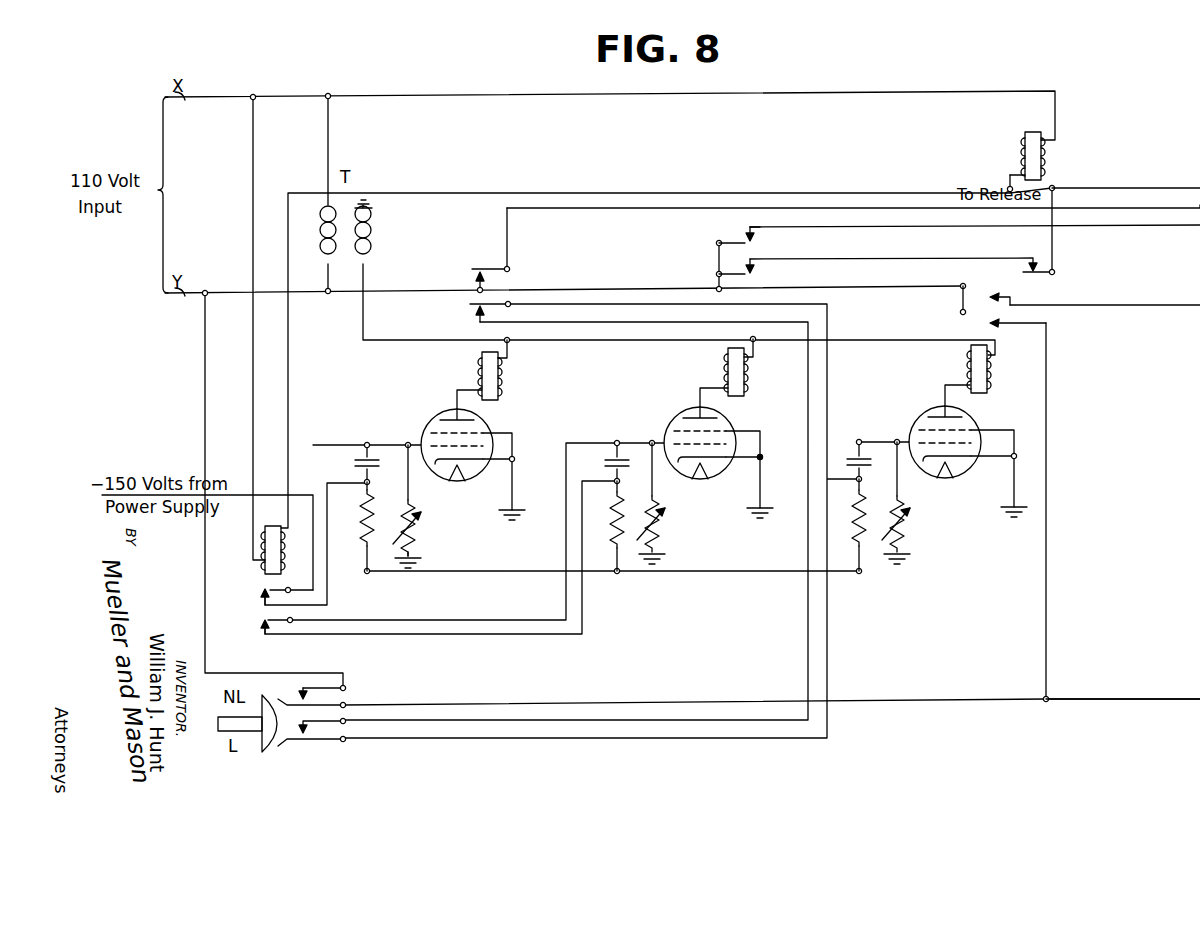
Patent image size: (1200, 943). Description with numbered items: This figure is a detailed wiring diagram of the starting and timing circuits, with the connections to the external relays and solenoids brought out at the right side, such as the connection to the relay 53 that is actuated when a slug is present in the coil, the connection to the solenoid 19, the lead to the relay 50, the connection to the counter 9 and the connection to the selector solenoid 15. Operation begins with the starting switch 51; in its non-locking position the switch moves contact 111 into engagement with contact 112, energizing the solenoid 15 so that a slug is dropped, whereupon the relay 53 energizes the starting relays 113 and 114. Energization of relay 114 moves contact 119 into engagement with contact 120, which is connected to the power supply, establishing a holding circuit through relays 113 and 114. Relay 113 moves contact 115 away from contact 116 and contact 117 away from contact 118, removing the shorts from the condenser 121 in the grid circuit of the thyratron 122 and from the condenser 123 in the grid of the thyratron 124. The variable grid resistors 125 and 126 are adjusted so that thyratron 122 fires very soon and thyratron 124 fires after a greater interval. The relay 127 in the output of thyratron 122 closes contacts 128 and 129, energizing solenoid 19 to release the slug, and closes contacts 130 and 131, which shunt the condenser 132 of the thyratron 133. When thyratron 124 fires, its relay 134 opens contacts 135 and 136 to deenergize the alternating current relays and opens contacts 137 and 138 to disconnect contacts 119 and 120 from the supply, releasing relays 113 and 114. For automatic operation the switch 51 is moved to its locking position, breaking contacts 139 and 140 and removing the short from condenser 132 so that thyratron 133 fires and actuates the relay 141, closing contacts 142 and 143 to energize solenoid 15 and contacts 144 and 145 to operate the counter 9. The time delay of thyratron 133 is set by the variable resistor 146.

The starting switch 51 is at (233, 723).
The switch contact 111 is at (312, 698).
The switch contact 112 is at (322, 685).
The starting relay 113 is at (266, 564).
The starting relay 114 is at (1030, 138).
The relay contact 115 is at (261, 592).
The relay contact 116 is at (265, 598).
The relay contact 117 is at (265, 620).
The relay contact 118 is at (265, 641).
The holding relay contact 119 is at (1054, 273).
The holding relay contact 120 is at (1030, 251).
The condenser 121 is at (361, 460).
The thyratron 122 is at (442, 408).
The condenser 123 is at (608, 462).
The thyratron 124 is at (674, 414).
The variable grid resistor 125 is at (412, 527).
The variable grid resistor 126 is at (662, 527).
The relay 127 is at (500, 382).
The relay contact 128 is at (470, 268).
The relay contact 129 is at (484, 279).
The relay contact 130 is at (472, 304).
The relay contact 131 is at (478, 322).
The condenser 132 is at (866, 449).
The thyratron 133 is at (922, 411).
The relay 134 is at (746, 372).
The relay contact 135 is at (747, 233).
The relay contact 136 is at (756, 237).
The relay contact 137 is at (719, 262).
The relay contact 138 is at (756, 267).
The switch contact 139 is at (312, 751).
The switch contact 140 is at (322, 729).
The relay 141 is at (987, 362).
The relay contact 142 is at (970, 314).
The relay contact 143 is at (1000, 320).
The relay contact 144 is at (982, 286).
The relay contact 145 is at (999, 298).
The variable resistor 146 is at (907, 522).
The relay 53 is at (1186, 184).
The solenoid 19 is at (1186, 205).
The relay 50 is at (1189, 225).
The counter 9 is at (1105, 295).
The solenoid 15 is at (1192, 704).